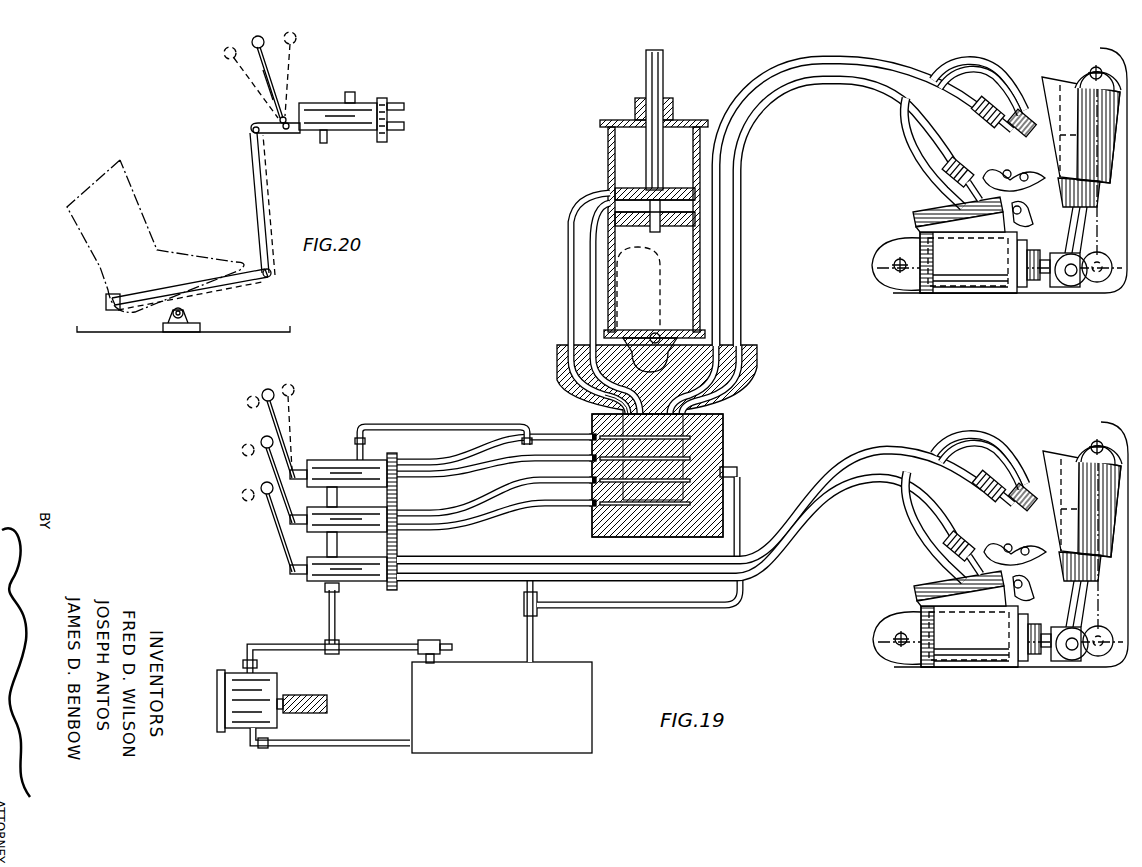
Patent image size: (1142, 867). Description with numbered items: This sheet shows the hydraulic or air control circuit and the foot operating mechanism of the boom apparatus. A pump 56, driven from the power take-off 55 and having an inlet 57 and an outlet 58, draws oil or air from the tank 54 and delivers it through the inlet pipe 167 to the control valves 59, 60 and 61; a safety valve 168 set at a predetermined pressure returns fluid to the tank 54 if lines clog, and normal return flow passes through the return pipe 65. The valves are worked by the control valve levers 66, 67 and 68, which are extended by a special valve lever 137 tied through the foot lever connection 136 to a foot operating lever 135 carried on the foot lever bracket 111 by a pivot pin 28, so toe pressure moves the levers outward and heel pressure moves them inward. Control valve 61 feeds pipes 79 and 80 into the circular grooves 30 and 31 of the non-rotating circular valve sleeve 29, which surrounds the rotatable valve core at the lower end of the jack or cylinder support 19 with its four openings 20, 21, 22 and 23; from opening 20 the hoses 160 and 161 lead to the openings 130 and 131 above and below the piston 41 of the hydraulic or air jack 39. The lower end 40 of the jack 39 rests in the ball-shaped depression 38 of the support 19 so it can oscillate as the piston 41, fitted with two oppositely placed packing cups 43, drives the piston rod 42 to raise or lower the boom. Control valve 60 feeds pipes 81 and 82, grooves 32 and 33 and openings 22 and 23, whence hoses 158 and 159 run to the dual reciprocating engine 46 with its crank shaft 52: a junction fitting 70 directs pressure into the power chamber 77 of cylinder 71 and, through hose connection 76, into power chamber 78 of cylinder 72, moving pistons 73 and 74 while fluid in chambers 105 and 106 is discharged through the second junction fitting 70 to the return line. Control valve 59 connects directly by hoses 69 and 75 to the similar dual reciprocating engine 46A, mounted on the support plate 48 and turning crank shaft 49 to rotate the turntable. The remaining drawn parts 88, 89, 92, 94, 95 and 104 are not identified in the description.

In FIG. 19, the jack or cylinder support 19 is at (730, 388).
In FIG. 19, the opening 20 is at (567, 380).
In FIG. 19, the opening 21 is at (557, 357).
In FIG. 19, the opening 22 is at (752, 371).
In FIG. 19, the opening 23 is at (748, 350).
In FIG. 20, the pivot pin 28 is at (184, 314).
In FIG. 19, the circular valve sleeve 29 is at (592, 530).
In FIG. 19, the circular groove 30 is at (720, 428).
In FIG. 19, the circular groove 31 is at (720, 447).
In FIG. 19, the circular groove 32 is at (725, 488).
In FIG. 19, the circular groove 33 is at (722, 513).
In FIG. 19, the ball-shaped depression 38 is at (618, 391).
In FIG. 19, the hydraulic or air jack or cylinder 39 is at (608, 137).
In FIG. 19, the lower end of jack 40 is at (633, 342).
In FIG. 19, the piston 41 is at (628, 187).
In FIG. 19, the piston rod 42 is at (645, 63).
In FIG. 19, the packing cups 43 is at (612, 202).
In FIG. 19, the dual reciprocating engine 46 is at (1062, 290).
In FIG. 19, the dual reciprocating engine 46A is at (1067, 670).
In FIG. 19, the support plate 48 is at (912, 215).
In FIG. 19, the crank shaft 49 is at (1090, 286).
In FIG. 19, the crank shaft 52 is at (1112, 295).
In FIG. 19, the tank 54 is at (553, 661).
In FIG. 19, the power take-off 55 is at (322, 695).
In FIG. 19, the pump 56 is at (228, 672).
In FIG. 19, the inlet 57 is at (251, 739).
In FIG. 19, the outlet 58 is at (259, 668).
In FIG. 20, the control valve 59 is at (313, 103).
In FIG. 19, the control valve 59 is at (292, 567).
In FIG. 20, the control valve 60 is at (346, 92).
In FIG. 19, the control valve 60 is at (293, 524).
In FIG. 20, the control valve 61 is at (378, 100).
In FIG. 19, the control valve 61 is at (290, 477).
In FIG. 19, the return pipe 65 is at (417, 423).
In FIG. 20, the control valve lever 66 is at (252, 45).
In FIG. 19, the control valve lever 66 is at (272, 507).
In FIG. 20, the control valve lever 67 is at (224, 56).
In FIG. 19, the control valve lever 67 is at (242, 450).
In FIG. 20, the valve lever 68 is at (264, 72).
In FIG. 19, the valve lever 68 is at (247, 404).
In FIG. 19, the pipe or hose 69 is at (848, 500).
In FIG. 19, the junction fitting 70 is at (980, 121).
In FIG. 19, the cylinder 71 is at (1083, 80).
In FIG. 19, the cylinder 72 is at (972, 294).
In FIG. 19, the piston 73 is at (1093, 54).
In FIG. 19, the piston 74 is at (940, 297).
In FIG. 19, the pipe or hose 75 is at (840, 458).
In FIG. 19, the hose connection 76 is at (905, 105).
In FIG. 19, the power chamber 77 is at (1070, 100).
In FIG. 19, the power chamber 78 is at (925, 296).
In FIG. 19, the pipe or hose 79 is at (432, 469).
In FIG. 19, the pipe or hose 80 is at (473, 463).
In FIG. 19, the pipe 81 is at (446, 528).
In FIG. 19, the hose 82 is at (493, 527).
In FIG. 19, the nut 88 is at (1012, 200).
In FIG. 19, the link 89 is at (1027, 215).
In FIG. 19, the pawl 92 is at (1005, 172).
In FIG. 19, the pivot 94 is at (1100, 64).
In FIG. 19, the bracket 95 is at (892, 268).
In FIG. 19, the conduit 104 is at (985, 50).
In FIG. 19, the chamber 105 is at (1022, 290).
In FIG. 19, the chamber 106 is at (1022, 110).
In FIG. 20, the foot lever bracket 111 is at (185, 331).
In FIG. 19, the opening 130 is at (655, 118).
In FIG. 19, the opening 131 is at (650, 335).
In FIG. 20, the foot operating lever 135 is at (247, 283).
In FIG. 20, the foot lever connection 136 is at (262, 213).
In FIG. 20, the special valve lever 137 is at (270, 135).
In FIG. 19, the hose 158 is at (877, 58).
In FIG. 19, the return pipe 159 is at (876, 83).
In FIG. 19, the pipe or hose 160 is at (594, 228).
In FIG. 19, the hose or pipe 161 is at (589, 259).
In FIG. 19, the inlet pipe 167 is at (326, 605).
In FIG. 19, the safety valve 168 is at (427, 640).